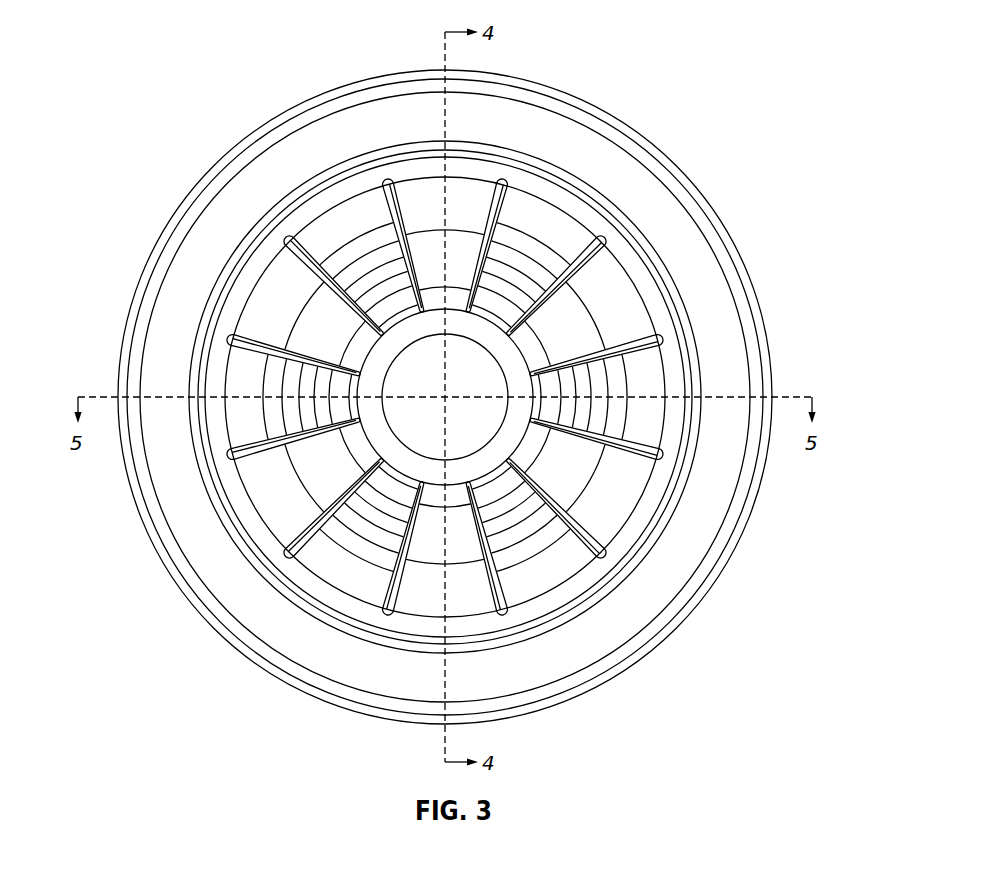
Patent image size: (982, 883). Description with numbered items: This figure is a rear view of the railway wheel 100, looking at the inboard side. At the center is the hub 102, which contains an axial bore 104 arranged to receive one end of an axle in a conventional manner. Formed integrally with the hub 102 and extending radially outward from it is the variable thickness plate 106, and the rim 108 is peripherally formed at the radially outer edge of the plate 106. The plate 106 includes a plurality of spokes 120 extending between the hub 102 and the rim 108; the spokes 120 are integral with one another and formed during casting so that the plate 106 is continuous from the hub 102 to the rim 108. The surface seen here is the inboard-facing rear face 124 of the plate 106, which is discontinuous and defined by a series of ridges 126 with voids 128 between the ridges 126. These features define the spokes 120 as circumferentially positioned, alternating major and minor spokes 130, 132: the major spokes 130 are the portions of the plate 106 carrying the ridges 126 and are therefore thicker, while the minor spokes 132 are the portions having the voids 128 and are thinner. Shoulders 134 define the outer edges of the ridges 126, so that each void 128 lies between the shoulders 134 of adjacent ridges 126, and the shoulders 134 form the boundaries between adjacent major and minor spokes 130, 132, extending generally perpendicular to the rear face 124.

The railway wheel 100 is at (213, 68).
The hub 102 is at (642, 332).
The axial bore 104 is at (528, 272).
The plate 106 is at (478, 366).
The rim 108 is at (756, 366).
The spokes 120 is at (640, 496).
The rear face 124 is at (612, 522).
The ridges 126 is at (277, 496).
The voids 128 is at (400, 540).
The major spokes 130 is at (273, 284).
The minor spokes 132 is at (352, 222).
The shoulders 134 is at (222, 452).